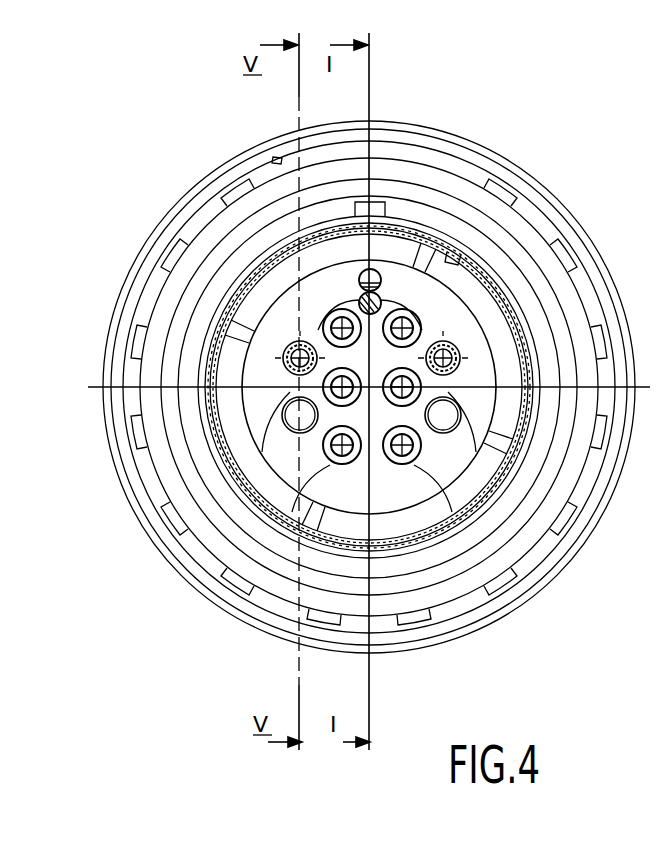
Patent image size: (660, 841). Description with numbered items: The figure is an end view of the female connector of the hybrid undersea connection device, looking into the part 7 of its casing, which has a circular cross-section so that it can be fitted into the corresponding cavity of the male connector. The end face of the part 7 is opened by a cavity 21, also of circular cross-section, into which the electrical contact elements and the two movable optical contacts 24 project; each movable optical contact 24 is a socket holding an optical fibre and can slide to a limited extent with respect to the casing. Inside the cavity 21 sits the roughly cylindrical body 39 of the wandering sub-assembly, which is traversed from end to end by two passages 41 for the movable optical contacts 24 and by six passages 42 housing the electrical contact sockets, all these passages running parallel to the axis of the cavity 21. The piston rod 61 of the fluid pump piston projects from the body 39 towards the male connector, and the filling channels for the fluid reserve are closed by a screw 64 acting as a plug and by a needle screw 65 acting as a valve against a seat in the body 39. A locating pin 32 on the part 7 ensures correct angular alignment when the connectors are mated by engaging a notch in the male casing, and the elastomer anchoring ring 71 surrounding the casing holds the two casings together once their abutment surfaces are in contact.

The part of the casing 7 is at (408, 556).
The cavity 21 is at (452, 258).
The movable optical contact 24 is at (290, 342).
The locating pin 32 is at (380, 204).
The body 39 is at (210, 560).
The passage 41 is at (287, 350).
The passage 42 is at (328, 462).
The piston rod 61 is at (288, 432).
The screw 64 is at (366, 272).
The needle screw 65 is at (359, 299).
The anchoring ring 71 is at (243, 588).